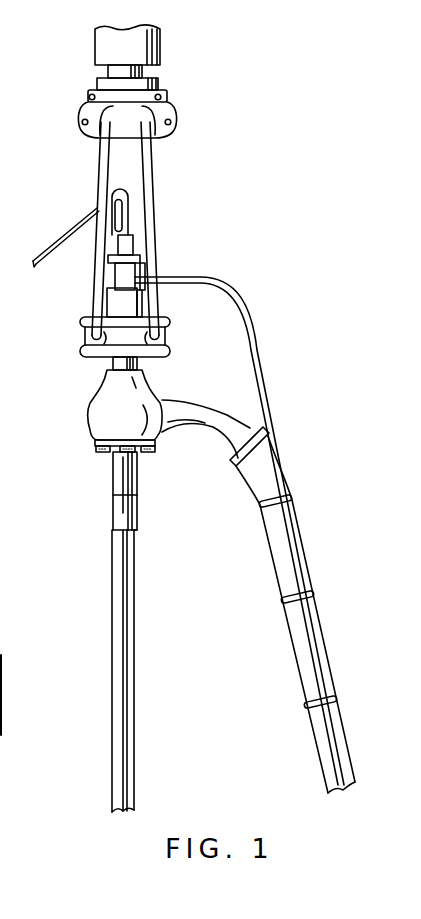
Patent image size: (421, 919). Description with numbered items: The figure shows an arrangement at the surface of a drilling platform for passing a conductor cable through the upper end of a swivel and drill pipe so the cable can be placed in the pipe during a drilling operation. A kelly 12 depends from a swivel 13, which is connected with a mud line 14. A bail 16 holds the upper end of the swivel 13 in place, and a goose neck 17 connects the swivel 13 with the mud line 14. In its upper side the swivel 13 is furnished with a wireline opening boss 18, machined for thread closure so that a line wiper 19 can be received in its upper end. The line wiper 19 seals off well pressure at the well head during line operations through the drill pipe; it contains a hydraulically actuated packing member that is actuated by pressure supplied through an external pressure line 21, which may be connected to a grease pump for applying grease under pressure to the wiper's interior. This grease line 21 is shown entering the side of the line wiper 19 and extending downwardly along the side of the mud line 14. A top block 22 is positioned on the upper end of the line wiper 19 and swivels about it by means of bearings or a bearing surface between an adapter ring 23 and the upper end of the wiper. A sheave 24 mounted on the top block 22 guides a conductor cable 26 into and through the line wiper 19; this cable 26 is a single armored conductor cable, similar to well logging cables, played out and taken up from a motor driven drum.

The kelly 12 is at (135, 773).
The swivel 13 is at (82, 409).
The mud line 14 is at (315, 737).
The bail 16 is at (157, 197).
The goose neck 17 is at (197, 401).
The wireline opening boss 18 is at (159, 304).
The line wiper 19 is at (110, 277).
The external pressure line 21 is at (258, 350).
The top block 22 is at (133, 247).
The adapter ring 23 is at (108, 259).
The sheave 24 is at (113, 189).
The conductor cable 26 is at (57, 234).